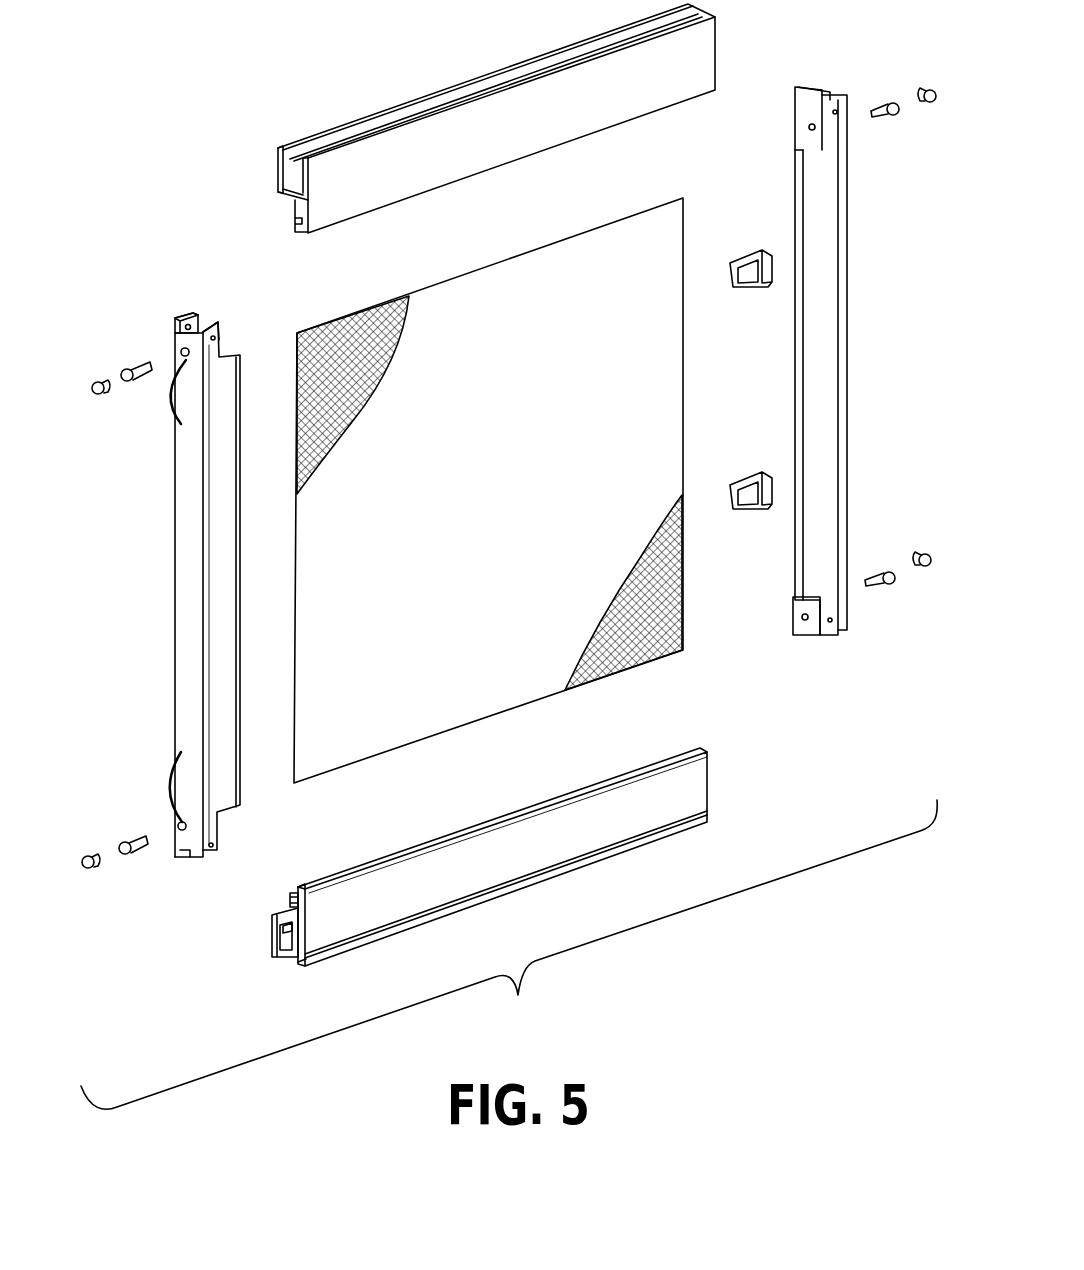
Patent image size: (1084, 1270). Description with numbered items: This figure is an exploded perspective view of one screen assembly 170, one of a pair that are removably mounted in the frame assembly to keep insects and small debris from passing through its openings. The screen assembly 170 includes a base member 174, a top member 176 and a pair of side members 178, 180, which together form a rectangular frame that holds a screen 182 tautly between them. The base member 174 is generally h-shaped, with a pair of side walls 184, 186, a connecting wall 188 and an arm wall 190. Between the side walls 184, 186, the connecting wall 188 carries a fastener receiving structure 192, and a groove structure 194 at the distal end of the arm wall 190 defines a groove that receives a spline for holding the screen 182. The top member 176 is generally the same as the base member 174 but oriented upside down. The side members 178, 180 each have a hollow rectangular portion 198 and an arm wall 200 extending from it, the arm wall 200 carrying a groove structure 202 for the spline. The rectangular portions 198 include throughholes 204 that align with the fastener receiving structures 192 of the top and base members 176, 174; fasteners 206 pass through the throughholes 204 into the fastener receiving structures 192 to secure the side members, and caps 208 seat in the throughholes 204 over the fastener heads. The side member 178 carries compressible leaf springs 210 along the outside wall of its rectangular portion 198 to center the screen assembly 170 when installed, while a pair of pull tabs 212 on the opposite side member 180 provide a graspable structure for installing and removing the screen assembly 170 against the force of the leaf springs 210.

The screen assembly 170 is at (509, 954).
The base member 174 is at (633, 793).
The top member 176 is at (547, 137).
The side member 178 is at (174, 604).
The side member 180 is at (838, 420).
The screen 182 is at (516, 688).
The side wall 184 is at (272, 940).
The side wall 186 is at (310, 960).
The connecting wall 188 is at (290, 898).
The arm wall 190 is at (322, 893).
The fastener receiving structure 192 is at (284, 957).
The groove structure 194 is at (296, 893).
The rectangular portion 198 is at (190, 322).
The arm wall 200 is at (222, 582).
The groove structure 202 is at (216, 328).
The throughhole 204 is at (183, 352).
The fastener 206 is at (137, 365).
The cap 208 is at (102, 393).
The leaf spring 210 is at (172, 398).
The pull tab 212 is at (746, 288).